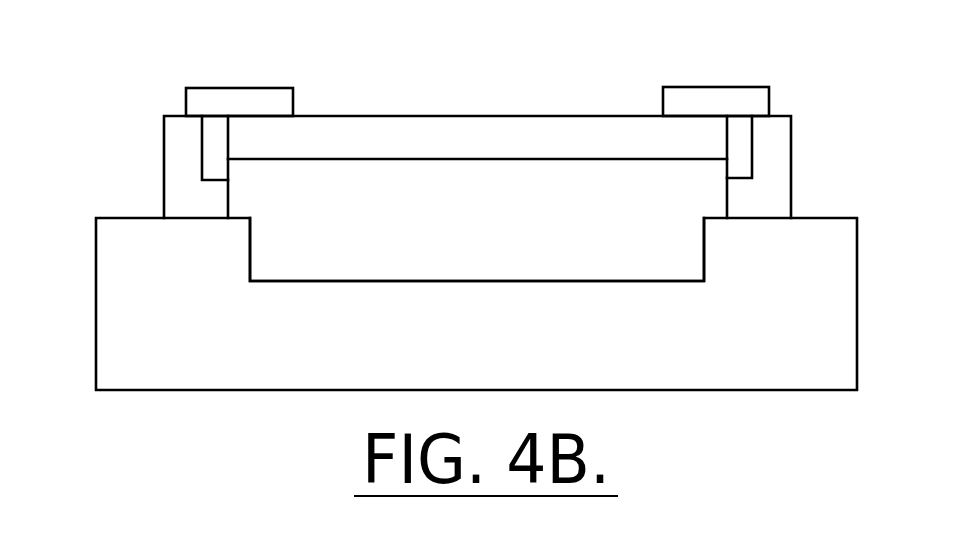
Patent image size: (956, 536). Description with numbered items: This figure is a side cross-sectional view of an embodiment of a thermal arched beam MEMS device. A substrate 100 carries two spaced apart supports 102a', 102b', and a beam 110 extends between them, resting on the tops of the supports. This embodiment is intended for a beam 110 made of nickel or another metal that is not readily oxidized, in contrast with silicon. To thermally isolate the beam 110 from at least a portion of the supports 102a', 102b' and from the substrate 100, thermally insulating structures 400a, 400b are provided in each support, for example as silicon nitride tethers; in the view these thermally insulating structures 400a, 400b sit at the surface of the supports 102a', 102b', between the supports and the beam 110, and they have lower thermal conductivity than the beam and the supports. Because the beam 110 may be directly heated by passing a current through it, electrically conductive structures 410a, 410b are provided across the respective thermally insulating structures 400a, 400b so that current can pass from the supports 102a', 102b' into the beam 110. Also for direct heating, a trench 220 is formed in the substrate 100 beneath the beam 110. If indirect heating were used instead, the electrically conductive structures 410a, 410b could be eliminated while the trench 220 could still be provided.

The substrate 100 is at (503, 364).
The trench 220 is at (503, 263).
The spaced apart support 102a' is at (138, 143).
The spaced apart support 102b' is at (817, 143).
The beam 110 is at (477, 83).
The thermally insulating structure 400a is at (265, 163).
The thermally insulating structure 400b is at (690, 163).
The electrically conductive structure 410a is at (209, 73).
The electrically conductive structure 410b is at (753, 73).